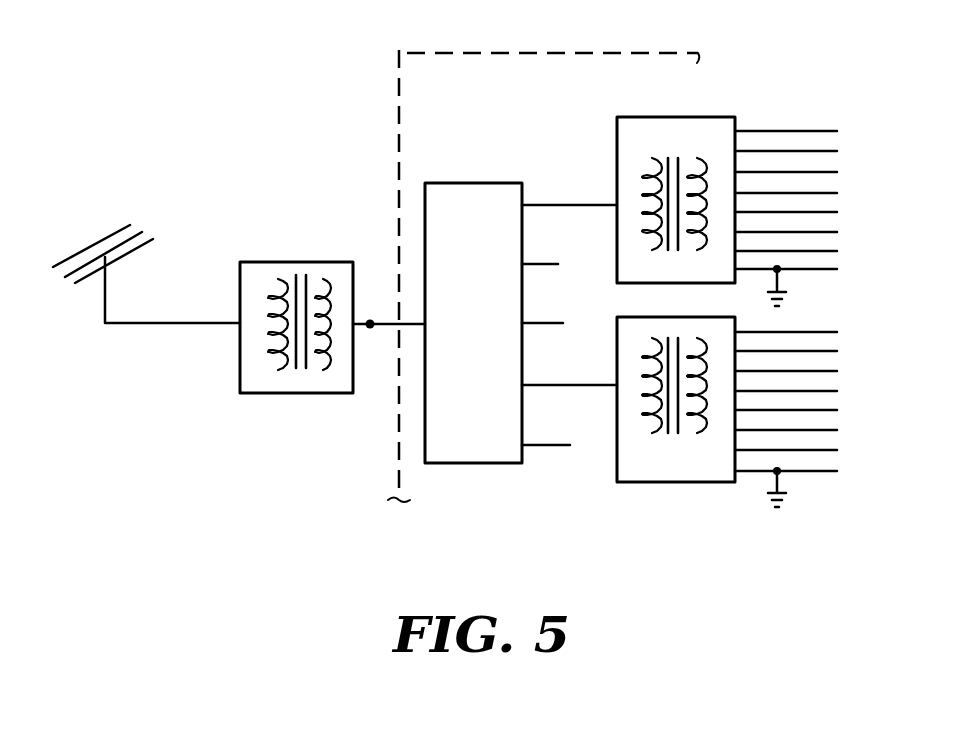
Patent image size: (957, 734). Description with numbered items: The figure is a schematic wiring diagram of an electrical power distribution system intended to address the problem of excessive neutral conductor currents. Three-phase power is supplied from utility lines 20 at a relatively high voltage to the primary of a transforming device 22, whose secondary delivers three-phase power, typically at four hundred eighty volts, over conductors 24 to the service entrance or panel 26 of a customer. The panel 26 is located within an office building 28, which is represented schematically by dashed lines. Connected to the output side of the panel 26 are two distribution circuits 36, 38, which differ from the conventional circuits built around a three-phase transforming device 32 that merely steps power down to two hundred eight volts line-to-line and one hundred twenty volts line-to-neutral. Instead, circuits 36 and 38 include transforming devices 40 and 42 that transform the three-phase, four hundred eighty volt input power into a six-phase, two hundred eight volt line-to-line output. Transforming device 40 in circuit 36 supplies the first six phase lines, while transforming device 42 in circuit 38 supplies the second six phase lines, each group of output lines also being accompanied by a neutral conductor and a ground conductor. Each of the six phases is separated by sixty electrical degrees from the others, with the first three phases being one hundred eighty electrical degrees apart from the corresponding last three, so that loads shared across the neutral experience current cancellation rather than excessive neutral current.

The utility lines 20 is at (158, 219).
The transforming device 22 is at (280, 262).
The conductors 24 is at (370, 329).
The service panel 26 is at (483, 183).
The office building 28 is at (392, 144).
The transforming device 32 is at (615, 177).
The circuit 36 is at (729, 99).
The circuit 38 is at (717, 516).
The transforming device 40 is at (663, 122).
The transforming device 42 is at (670, 474).